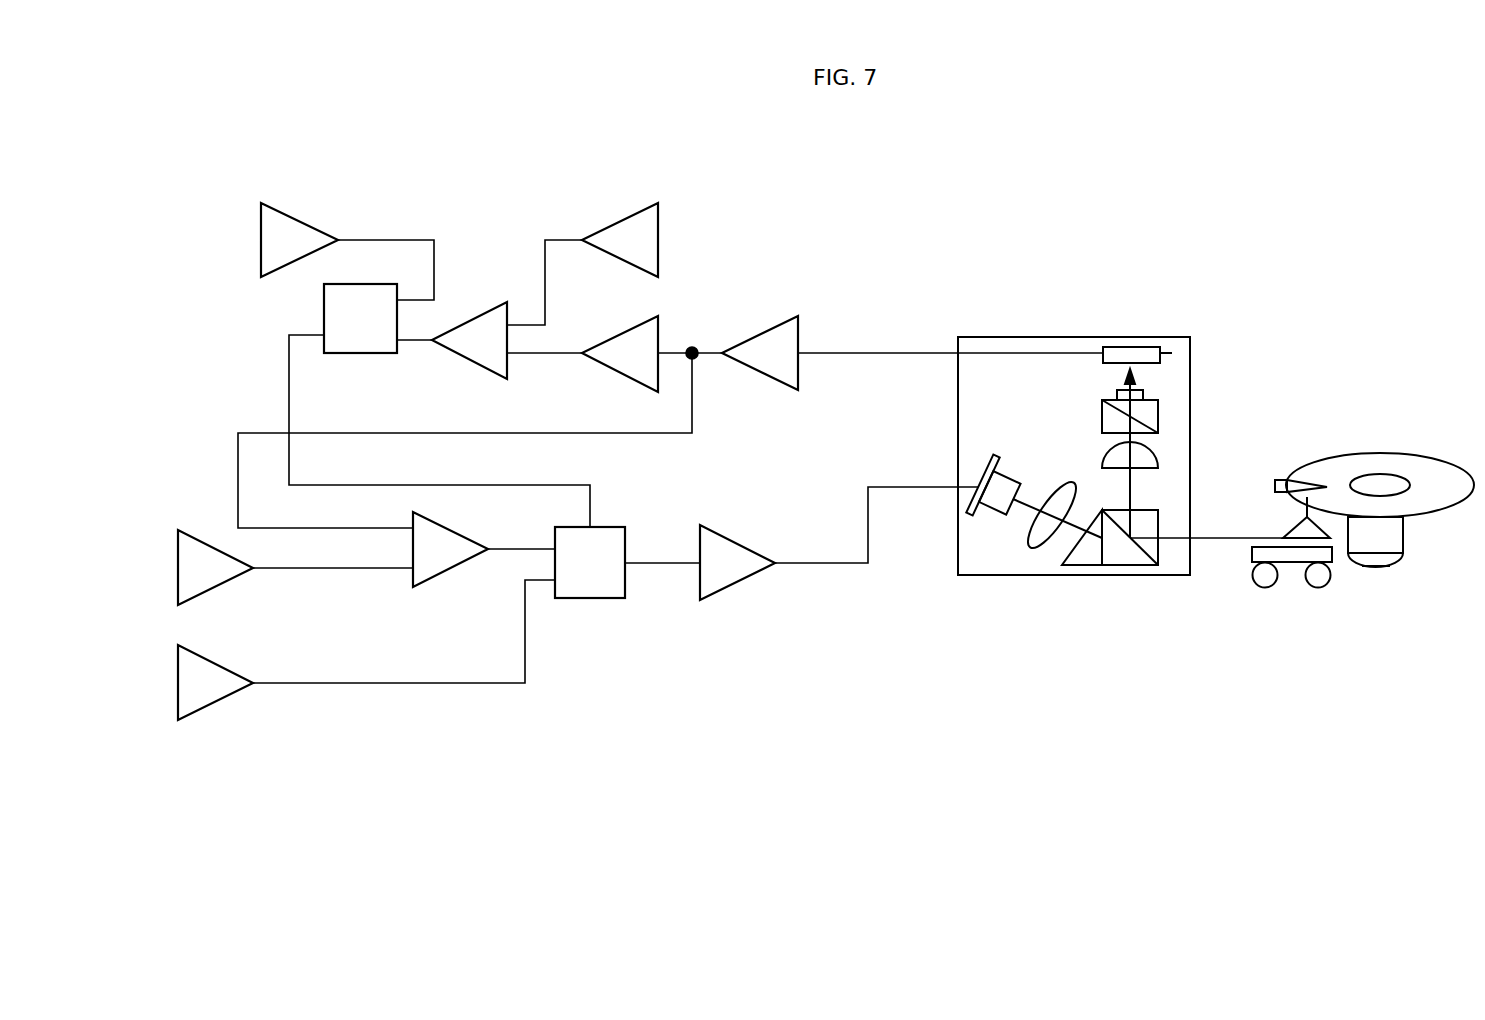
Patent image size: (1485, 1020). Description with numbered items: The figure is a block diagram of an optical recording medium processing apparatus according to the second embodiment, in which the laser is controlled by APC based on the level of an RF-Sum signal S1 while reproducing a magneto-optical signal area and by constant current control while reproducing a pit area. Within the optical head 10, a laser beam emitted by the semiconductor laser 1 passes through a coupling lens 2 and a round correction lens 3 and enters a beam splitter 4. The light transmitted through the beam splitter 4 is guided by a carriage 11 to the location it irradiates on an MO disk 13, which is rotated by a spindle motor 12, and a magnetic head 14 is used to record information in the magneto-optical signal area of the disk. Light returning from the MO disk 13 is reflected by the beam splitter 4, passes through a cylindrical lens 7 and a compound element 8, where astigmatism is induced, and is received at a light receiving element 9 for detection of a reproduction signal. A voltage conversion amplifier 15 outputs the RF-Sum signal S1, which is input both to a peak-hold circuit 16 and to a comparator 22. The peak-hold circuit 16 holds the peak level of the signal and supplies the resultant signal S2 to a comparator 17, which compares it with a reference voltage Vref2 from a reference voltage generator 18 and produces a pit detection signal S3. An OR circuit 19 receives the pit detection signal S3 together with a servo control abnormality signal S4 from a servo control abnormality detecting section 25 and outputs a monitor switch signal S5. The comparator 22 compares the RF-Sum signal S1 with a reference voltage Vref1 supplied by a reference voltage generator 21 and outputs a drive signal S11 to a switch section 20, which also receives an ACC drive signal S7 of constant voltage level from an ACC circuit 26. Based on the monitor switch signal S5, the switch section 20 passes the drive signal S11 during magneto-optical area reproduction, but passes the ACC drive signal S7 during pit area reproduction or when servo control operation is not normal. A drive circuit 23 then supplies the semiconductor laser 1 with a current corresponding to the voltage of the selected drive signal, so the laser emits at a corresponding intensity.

The semiconductor laser 1 is at (1034, 494).
The coupling lens 2 is at (1050, 520).
The round correction lens 3 is at (1082, 560).
The beam splitter 4 is at (1192, 560).
The cylindrical lens 7 is at (1143, 461).
The compound element 8 is at (1140, 453).
The light receiving element 9 is at (1119, 363).
The optical head 10 is at (1074, 438).
The carriage 11 is at (1274, 552).
The spindle motor 12 is at (1397, 542).
The MO disk 13 is at (1380, 470).
The magnetic head 14 is at (1294, 478).
The voltage conversion amplifier 15 is at (779, 364).
The peak-hold circuit 16 is at (620, 369).
The comparator 17 is at (469, 356).
The reference voltage generator 18 is at (620, 228).
The OR circuit 19 is at (360, 333).
The switch section 20 is at (593, 580).
The reference voltage generator 21 is at (215, 576).
The comparator 22 is at (458, 560).
The drive circuit 23 is at (737, 569).
The servo control abnormality detecting section 25 is at (299, 230).
The ACC circuit 26 is at (215, 693).
The RF-Sum signal S1 is at (707, 353).
The peak-held signal S2 is at (560, 353).
The pit detection signal S3 is at (412, 340).
The servo control abnormality signal S4 is at (434, 273).
The monitor switch signal S5 is at (289, 388).
The ACC drive signal S7 is at (390, 683).
The drive signal S11 is at (498, 549).
The reference voltage Vref1 is at (333, 582).
The reference voltage Vref2 is at (547, 266).